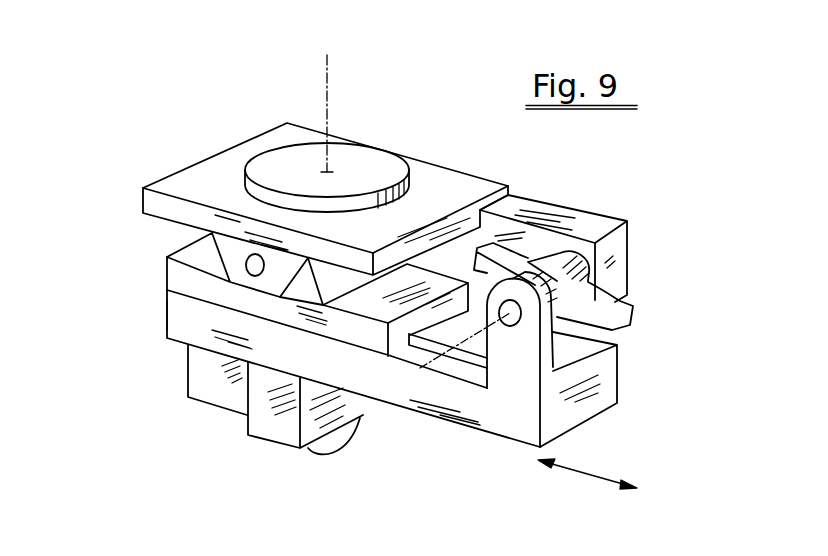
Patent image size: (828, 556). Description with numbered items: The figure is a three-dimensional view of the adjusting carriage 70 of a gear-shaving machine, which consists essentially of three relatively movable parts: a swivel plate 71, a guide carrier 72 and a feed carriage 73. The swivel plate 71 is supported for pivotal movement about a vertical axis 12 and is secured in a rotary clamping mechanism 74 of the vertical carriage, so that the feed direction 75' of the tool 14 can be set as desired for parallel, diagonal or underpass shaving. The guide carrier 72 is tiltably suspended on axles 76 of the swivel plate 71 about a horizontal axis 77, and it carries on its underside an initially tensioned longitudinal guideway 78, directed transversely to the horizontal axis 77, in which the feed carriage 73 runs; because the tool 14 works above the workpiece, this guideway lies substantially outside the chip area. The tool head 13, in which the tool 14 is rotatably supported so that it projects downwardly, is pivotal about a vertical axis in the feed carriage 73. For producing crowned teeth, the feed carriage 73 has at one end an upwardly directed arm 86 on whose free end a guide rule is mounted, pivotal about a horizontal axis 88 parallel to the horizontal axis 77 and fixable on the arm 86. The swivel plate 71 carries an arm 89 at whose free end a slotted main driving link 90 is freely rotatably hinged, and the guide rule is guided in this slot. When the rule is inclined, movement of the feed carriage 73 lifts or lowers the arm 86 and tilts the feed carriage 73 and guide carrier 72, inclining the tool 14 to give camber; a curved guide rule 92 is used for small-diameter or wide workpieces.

The vertical axis 12 is at (322, 84).
The rotary clamping mechanism 74 is at (282, 165).
The swivel plate 71 is at (176, 205).
The axles 76 is at (246, 264).
The guide carrier 72 is at (190, 280).
The horizontal axis 77 is at (165, 319).
The feed carriage 73 is at (200, 330).
The tool head 13 is at (278, 432).
The tool 14 is at (327, 442).
The longitudinal guideway 78 is at (423, 342).
The horizontal axis 88 is at (447, 355).
The arm 86 is at (505, 352).
The guide rule 92 is at (615, 303).
The main driving link 90 is at (560, 262).
The arm 89 is at (600, 225).
The feed direction 75' is at (584, 500).
The adjusting carriage 70 is at (607, 183).